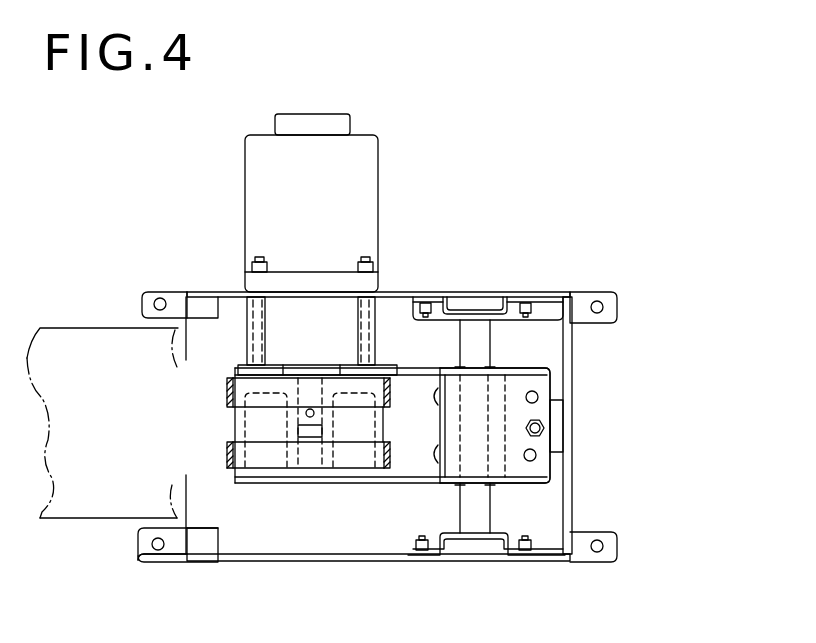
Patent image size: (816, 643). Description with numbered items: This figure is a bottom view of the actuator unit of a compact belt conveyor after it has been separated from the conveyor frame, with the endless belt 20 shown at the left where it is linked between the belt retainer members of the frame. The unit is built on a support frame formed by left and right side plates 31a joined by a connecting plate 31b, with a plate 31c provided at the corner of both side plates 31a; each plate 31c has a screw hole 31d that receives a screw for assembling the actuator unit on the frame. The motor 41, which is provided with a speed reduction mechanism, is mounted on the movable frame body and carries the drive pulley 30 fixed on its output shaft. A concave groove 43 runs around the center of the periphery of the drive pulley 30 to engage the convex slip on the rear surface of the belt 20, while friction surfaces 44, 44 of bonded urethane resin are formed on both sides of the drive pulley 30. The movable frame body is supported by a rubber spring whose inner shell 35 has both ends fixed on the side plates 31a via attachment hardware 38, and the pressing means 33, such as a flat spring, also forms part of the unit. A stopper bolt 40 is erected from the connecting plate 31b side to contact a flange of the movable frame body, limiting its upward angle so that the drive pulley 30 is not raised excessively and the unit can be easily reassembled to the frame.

The endless belt 20 is at (83, 333).
The drive pulley 30 is at (266, 463).
The side plate 31a is at (395, 292).
The connecting plate 31b is at (567, 426).
The plate 31c is at (175, 295).
The screw hole 31d is at (156, 298).
The pressing means 33 is at (552, 387).
The inner shell 35 is at (473, 343).
The attachment hardware 38 is at (497, 303).
The stopper bolt 40 is at (541, 431).
The motor 41 is at (263, 145).
The concave groove 43 is at (240, 422).
The friction surface 44 is at (230, 455).